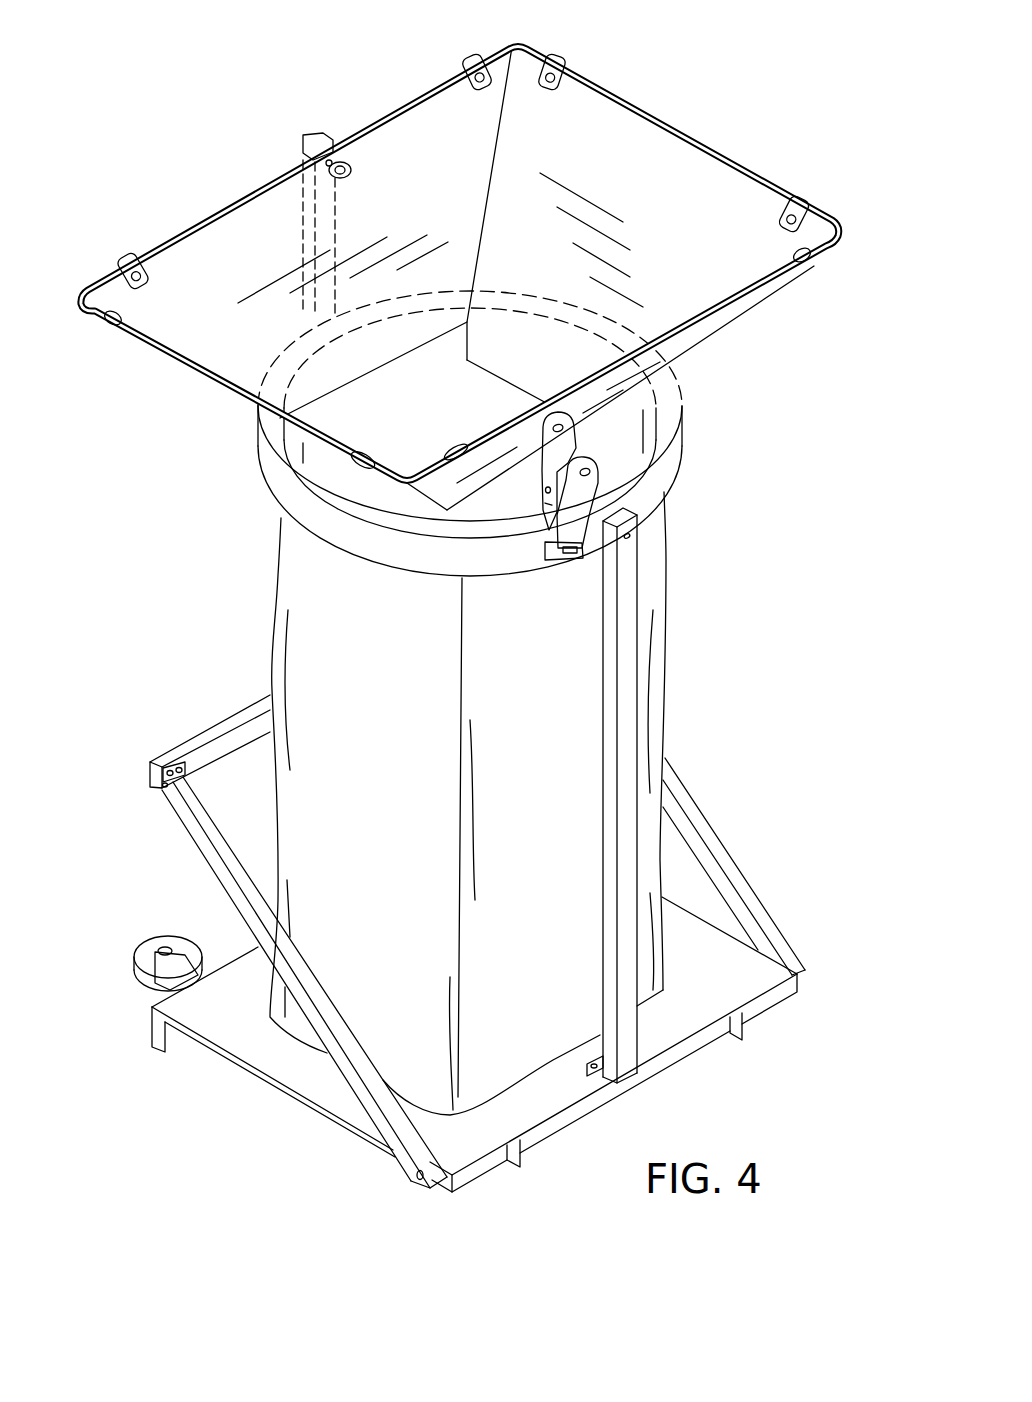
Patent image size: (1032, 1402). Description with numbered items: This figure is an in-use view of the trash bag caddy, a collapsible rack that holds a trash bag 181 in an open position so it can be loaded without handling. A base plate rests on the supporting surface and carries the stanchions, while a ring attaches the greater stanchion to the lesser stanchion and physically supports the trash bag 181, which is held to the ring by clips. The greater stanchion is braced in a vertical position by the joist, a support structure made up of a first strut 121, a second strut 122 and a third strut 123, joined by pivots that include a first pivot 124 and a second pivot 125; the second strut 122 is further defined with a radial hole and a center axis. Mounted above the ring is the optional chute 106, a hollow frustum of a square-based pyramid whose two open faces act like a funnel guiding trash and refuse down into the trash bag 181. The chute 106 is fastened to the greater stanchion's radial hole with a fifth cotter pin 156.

The chute 106 is at (687, 163).
The fifth cotter pin 156 is at (337, 166).
The trash bag 181 is at (660, 710).
The first strut 121 is at (212, 862).
The second strut 122 is at (227, 720).
The third strut 123 is at (725, 843).
The first pivot 124 is at (417, 1182).
The second pivot 125 is at (163, 790).